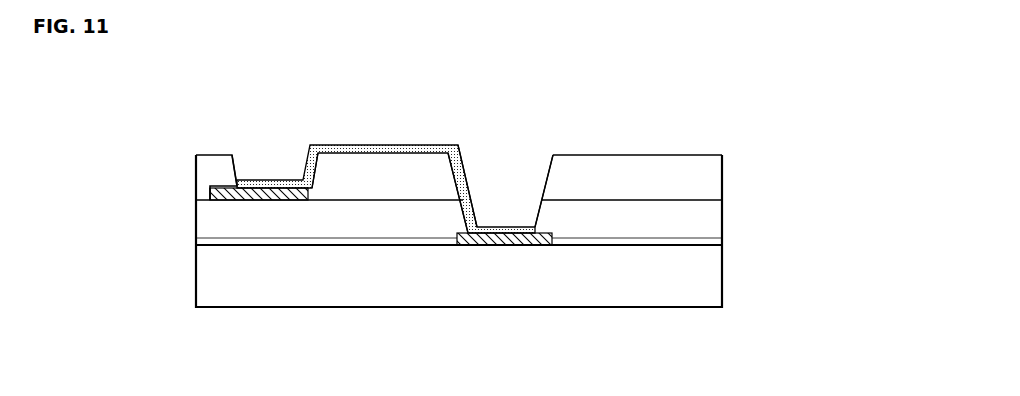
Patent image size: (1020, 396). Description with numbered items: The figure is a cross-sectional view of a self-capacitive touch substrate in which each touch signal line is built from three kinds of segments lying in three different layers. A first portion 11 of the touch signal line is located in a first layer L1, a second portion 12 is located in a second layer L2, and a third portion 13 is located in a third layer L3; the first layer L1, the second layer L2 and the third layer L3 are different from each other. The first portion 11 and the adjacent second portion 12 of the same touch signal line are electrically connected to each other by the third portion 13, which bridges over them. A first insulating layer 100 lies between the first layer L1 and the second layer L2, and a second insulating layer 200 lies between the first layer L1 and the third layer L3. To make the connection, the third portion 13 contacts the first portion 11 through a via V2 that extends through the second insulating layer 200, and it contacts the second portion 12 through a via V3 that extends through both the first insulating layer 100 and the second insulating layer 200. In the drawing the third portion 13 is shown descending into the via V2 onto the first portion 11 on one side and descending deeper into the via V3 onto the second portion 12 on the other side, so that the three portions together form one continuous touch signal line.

The first portion 11 is at (223, 186).
The second portion 12 is at (535, 244).
The third portion 13 is at (377, 146).
The first insulating layer 100 is at (722, 213).
The second insulating layer 200 is at (722, 179).
The first layer L1 is at (196, 193).
The second layer L2 is at (566, 238).
The third layer L3 is at (462, 148).
The via V2 is at (275, 168).
The via V3 is at (500, 193).